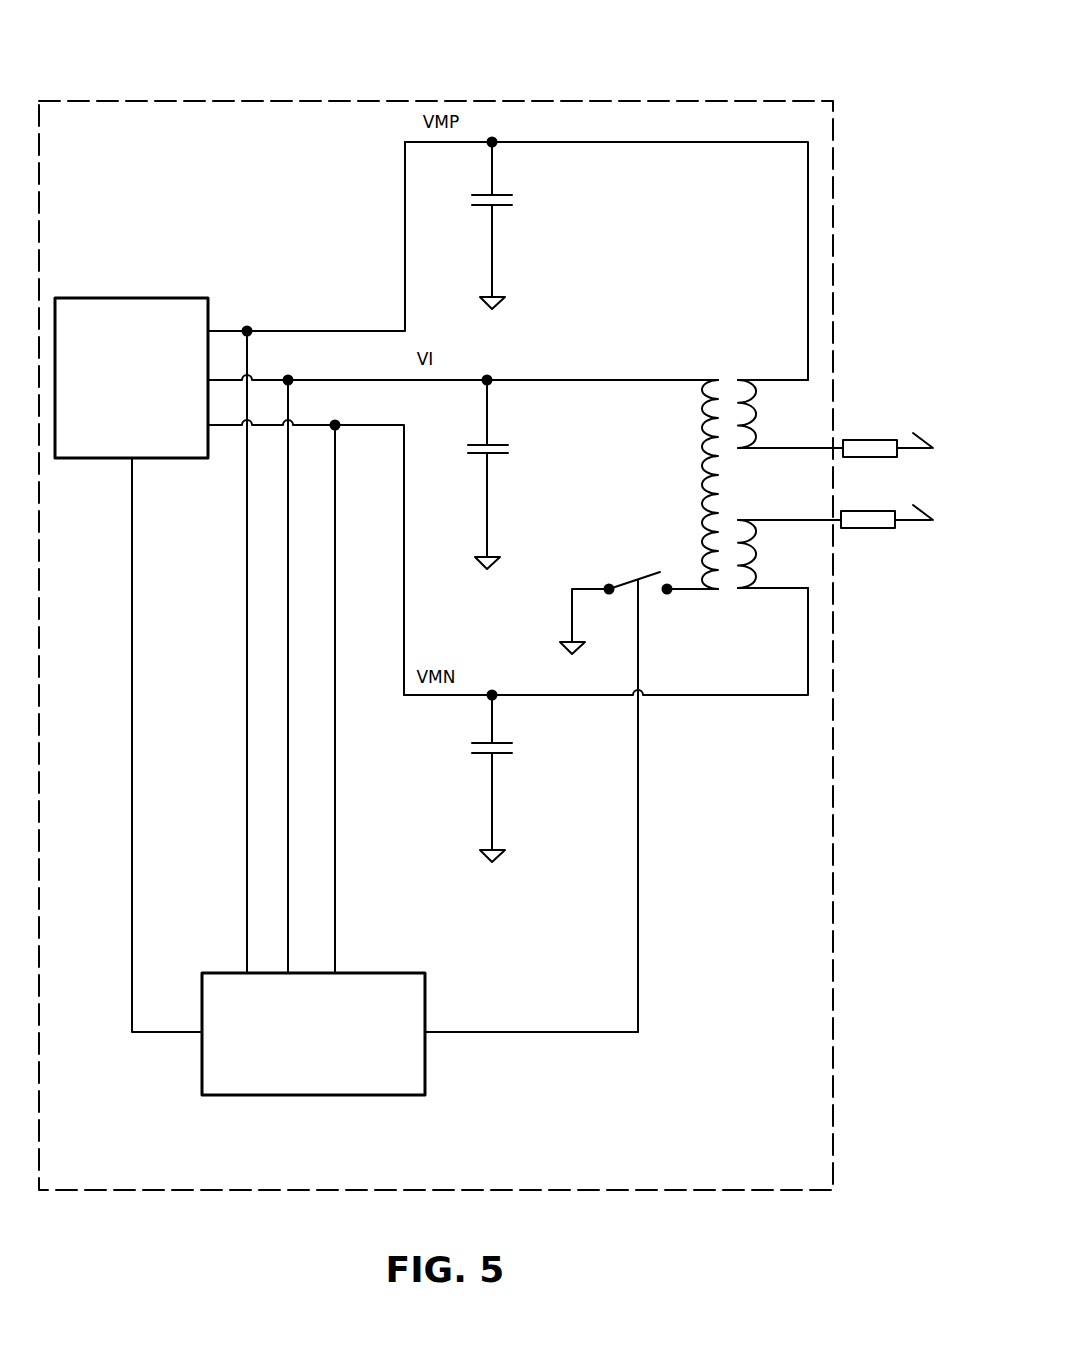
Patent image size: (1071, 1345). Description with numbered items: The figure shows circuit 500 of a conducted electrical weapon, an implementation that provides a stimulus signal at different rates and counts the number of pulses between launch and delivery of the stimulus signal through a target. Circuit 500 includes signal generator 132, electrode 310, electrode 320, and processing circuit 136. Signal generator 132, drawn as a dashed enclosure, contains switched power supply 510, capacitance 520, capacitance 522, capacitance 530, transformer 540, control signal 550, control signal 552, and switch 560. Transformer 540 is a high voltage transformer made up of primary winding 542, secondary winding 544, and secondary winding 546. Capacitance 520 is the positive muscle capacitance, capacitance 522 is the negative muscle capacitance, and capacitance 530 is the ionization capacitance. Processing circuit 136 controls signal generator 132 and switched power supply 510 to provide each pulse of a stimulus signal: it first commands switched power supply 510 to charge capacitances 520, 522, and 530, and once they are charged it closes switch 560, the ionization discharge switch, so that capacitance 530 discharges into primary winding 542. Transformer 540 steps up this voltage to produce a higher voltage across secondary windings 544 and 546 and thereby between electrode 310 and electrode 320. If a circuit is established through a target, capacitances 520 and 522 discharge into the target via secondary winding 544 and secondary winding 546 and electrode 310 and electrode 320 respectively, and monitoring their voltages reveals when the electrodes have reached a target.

The circuit 500 is at (188, 73).
The signal generator 132 is at (635, 100).
The switched power supply 510 is at (117, 298).
The capacitance 520 is at (507, 238).
The capacitance 530 is at (502, 487).
The capacitance 522 is at (509, 791).
The transformer 540 is at (731, 468).
The primary winding 542 is at (702, 484).
The secondary winding 544 is at (757, 413).
The secondary winding 546 is at (757, 555).
The switch 560 is at (629, 788).
The electrode 310 is at (870, 440).
The electrode 320 is at (868, 533).
The control signal 550 is at (167, 745).
The control signal 552 is at (531, 1016).
The processing circuit 136 is at (312, 1095).